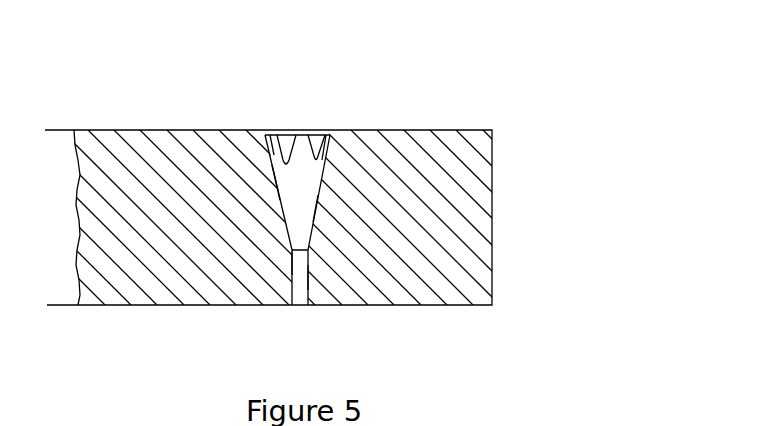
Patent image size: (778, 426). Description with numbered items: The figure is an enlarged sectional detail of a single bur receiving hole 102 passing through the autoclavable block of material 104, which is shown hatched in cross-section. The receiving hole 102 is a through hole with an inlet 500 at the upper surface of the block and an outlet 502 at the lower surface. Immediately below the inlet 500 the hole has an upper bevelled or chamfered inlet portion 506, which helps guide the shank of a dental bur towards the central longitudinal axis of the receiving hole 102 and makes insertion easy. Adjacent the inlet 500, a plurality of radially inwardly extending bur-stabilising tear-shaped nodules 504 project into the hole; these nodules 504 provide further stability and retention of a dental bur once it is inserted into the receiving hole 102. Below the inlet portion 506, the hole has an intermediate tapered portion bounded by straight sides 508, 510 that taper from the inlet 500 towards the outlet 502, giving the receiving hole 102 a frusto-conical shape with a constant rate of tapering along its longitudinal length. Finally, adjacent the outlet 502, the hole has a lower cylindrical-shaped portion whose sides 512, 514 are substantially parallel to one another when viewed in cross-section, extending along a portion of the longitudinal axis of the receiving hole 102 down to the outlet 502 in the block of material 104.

The inlet 500 is at (315, 198).
The outlet 502 is at (310, 327).
The bur-stabilising tear-shaped nodules 504 is at (281, 131).
The inlet portion 506 is at (283, 128).
The receiving hole 102 is at (305, 190).
The autoclavable block of material 104 is at (448, 230).
The straight side of intermediate tapered portion 508 is at (280, 200).
The straight side of intermediate tapered portion 510 is at (315, 208).
The side of lower cylindrical-shaped portion 512 is at (293, 262).
The side of lower cylindrical-shaped portion 514 is at (310, 278).